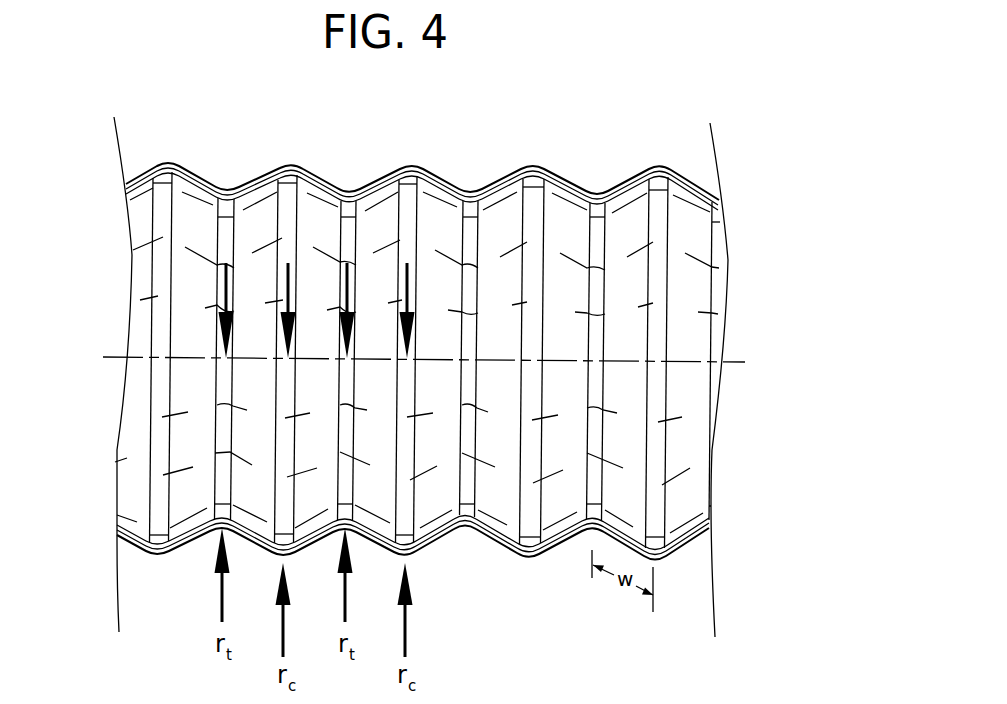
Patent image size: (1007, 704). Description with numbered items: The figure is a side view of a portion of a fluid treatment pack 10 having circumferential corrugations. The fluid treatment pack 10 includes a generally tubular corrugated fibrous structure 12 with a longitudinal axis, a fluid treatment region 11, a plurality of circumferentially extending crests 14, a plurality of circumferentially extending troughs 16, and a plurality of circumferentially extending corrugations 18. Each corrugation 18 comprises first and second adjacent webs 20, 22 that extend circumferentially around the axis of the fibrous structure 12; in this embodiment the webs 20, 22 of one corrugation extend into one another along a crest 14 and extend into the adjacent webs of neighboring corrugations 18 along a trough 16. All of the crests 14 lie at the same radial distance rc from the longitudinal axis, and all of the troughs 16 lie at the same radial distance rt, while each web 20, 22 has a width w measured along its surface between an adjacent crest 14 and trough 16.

The fluid treatment pack 10 is at (188, 545).
The fluid treatment region 11 is at (188, 167).
The corrugated fibrous structure 12 is at (551, 550).
The crest 14 is at (168, 157).
The trough 16 is at (227, 192).
The corrugation 18 is at (263, 168).
The first web 20 is at (382, 170).
The second web 22 is at (435, 170).